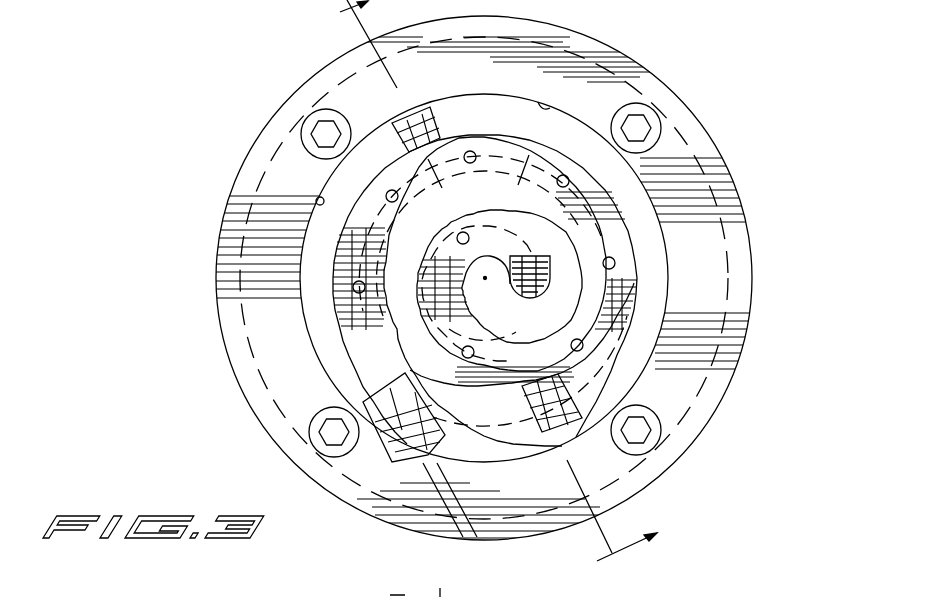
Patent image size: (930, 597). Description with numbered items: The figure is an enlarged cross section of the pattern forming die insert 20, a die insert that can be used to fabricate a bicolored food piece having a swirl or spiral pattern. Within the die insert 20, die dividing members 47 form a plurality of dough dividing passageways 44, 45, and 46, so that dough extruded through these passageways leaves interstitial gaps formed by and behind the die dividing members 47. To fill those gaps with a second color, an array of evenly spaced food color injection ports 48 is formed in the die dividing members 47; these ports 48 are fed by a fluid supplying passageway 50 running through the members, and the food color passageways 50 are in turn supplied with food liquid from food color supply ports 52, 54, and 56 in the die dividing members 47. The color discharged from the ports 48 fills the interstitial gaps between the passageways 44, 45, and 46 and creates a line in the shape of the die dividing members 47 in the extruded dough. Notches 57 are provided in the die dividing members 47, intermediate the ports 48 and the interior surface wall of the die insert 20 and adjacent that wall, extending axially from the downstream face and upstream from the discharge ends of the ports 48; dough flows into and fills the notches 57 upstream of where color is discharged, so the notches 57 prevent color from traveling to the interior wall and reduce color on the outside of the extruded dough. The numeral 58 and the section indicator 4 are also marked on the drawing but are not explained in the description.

The die insert 20 is at (731, 163).
The passageway 44 is at (550, 106).
The passageway 45 is at (316, 201).
The passageway 46 is at (421, 447).
The die dividing members 47 is at (621, 252).
The food color injection ports 48 is at (476, 186).
The fluid supplying passageway 50 is at (517, 137).
The food color supply port 52 is at (496, 481).
The food color supply port 54 is at (411, 107).
The food color supply port 56 is at (645, 481).
The notches 57 is at (437, 118).
The section indicator 58 is at (392, 530).
The section line 4- 4 is at (472, 295).